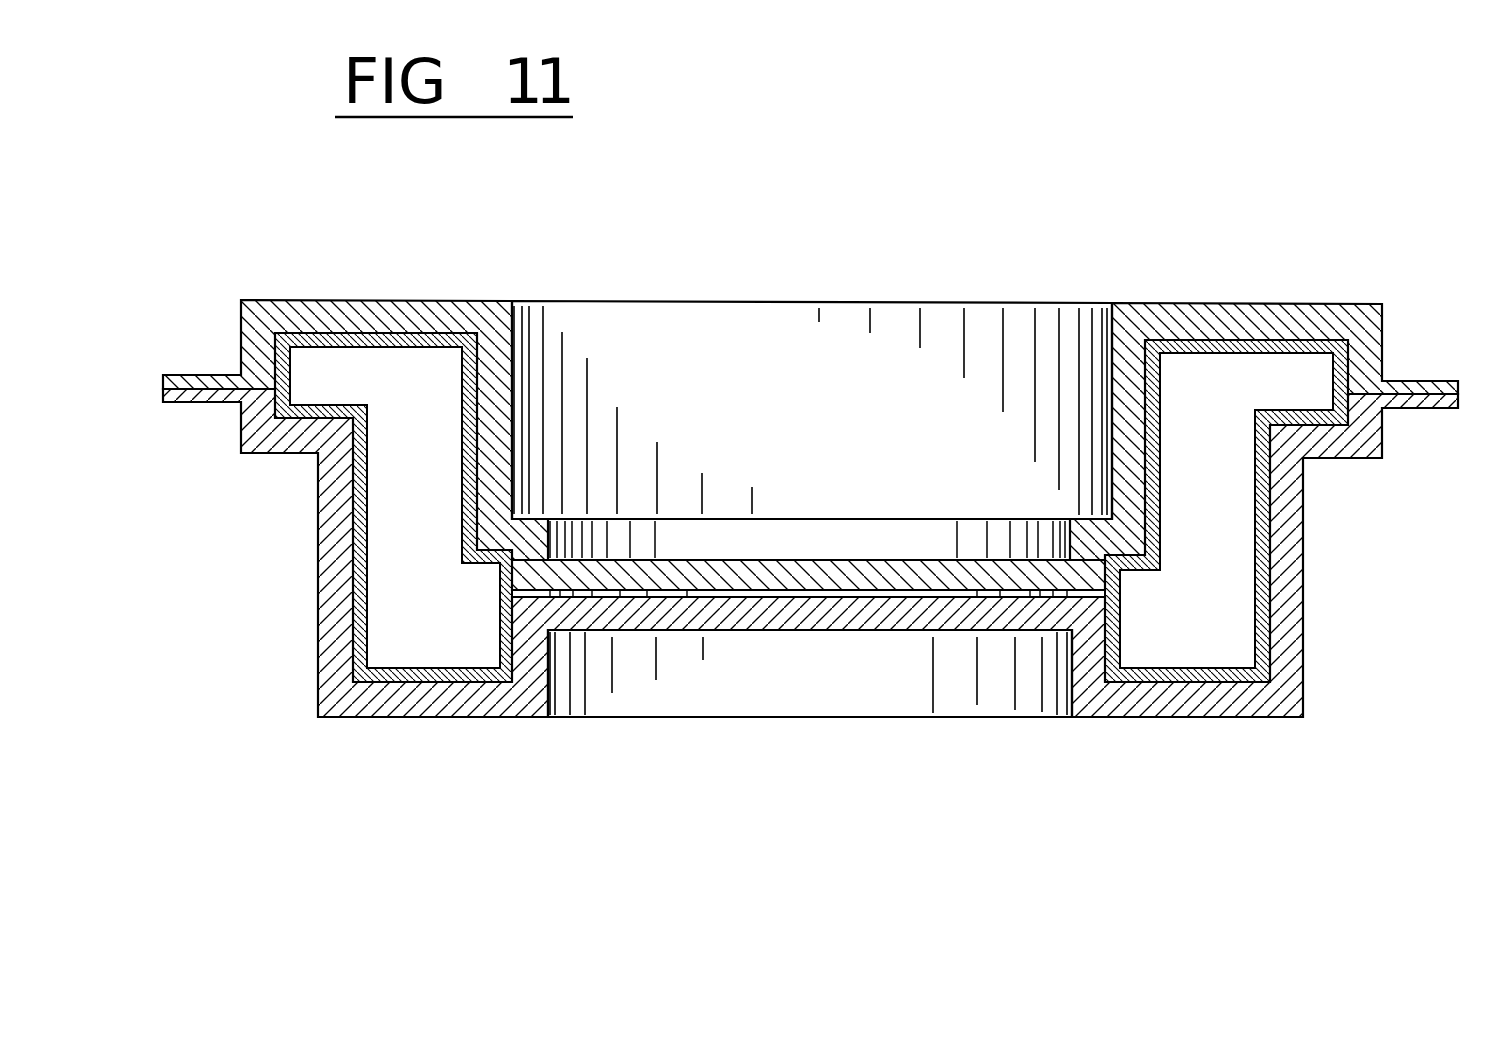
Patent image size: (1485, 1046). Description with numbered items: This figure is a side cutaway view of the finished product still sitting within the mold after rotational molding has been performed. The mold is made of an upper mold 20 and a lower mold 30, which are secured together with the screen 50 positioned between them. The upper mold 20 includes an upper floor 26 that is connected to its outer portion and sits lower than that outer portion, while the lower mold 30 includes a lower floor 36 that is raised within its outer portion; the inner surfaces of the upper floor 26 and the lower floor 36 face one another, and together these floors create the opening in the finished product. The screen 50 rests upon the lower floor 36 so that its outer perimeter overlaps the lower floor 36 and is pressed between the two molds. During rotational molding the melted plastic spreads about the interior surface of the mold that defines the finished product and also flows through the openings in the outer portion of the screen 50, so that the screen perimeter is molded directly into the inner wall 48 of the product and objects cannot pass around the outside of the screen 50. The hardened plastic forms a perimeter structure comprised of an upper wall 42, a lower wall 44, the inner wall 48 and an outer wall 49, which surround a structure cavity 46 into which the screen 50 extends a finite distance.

The upper mold 20 is at (1087, 303).
The upper floor 26 is at (793, 573).
The lower mold 30 is at (300, 482).
The lower floor 36 is at (778, 617).
The upper wall 42 is at (378, 340).
The lower wall 44 is at (366, 718).
The structure cavity 46 is at (388, 632).
The inner wall 48 is at (508, 653).
The outer wall 49 is at (357, 528).
The screen 50 is at (520, 594).